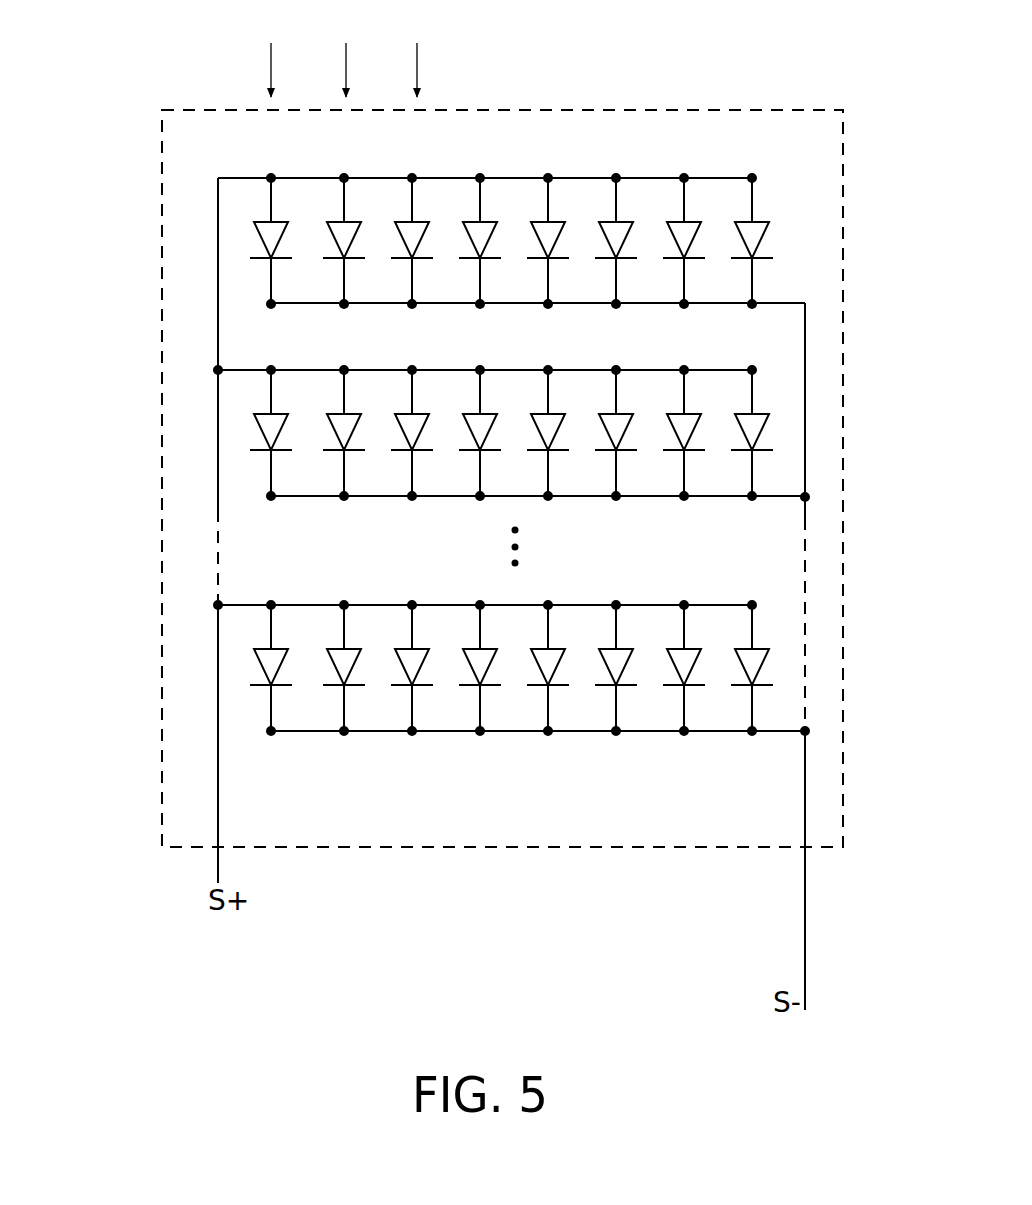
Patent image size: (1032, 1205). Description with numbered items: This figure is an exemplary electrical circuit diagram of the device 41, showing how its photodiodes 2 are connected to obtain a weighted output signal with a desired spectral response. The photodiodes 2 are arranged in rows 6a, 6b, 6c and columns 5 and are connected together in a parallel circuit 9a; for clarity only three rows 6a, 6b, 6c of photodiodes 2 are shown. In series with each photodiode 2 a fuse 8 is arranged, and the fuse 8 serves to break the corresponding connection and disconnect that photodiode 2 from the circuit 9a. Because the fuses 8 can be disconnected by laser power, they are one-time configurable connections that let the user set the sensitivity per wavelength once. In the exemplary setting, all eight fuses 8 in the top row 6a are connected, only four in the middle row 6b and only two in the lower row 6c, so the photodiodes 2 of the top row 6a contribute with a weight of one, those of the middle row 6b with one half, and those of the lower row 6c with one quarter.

The photodiode 2 is at (265, 227).
The column 5 is at (344, 55).
The top row 6a is at (426, 236).
The middle row 6b is at (142, 428).
The lower row 6c is at (142, 665).
The fuse 8 is at (270, 277).
The parallel circuit 9a is at (805, 347).
The device 41 is at (683, 110).